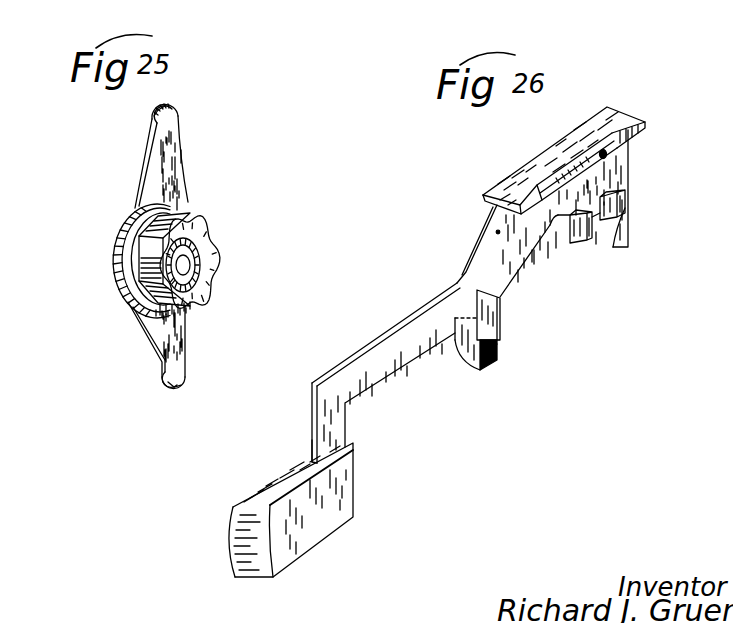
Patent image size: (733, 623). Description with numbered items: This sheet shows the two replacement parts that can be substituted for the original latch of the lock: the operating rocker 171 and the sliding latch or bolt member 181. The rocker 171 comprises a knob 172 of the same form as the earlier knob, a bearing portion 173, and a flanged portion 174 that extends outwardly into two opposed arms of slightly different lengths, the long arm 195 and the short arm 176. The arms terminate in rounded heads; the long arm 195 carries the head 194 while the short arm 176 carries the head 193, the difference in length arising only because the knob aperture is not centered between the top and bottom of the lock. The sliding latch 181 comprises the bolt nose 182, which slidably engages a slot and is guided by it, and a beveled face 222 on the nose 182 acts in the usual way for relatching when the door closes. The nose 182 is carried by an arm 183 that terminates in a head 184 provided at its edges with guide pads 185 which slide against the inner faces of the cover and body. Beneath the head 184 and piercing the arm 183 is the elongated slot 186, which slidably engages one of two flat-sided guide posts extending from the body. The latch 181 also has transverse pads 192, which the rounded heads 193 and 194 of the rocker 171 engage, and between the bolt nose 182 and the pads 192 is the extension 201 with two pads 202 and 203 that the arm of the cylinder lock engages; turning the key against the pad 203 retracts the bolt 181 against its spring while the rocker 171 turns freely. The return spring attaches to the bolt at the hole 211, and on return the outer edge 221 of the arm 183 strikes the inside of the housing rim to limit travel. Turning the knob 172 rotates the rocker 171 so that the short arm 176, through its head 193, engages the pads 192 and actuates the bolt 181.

In FIG. 25, the rocker 171 is at (199, 178).
In FIG. 25, the knob 172 is at (212, 241).
In FIG. 25, the bearing portion 173 is at (186, 206).
In FIG. 25, the flanged portion 174 is at (118, 241).
In FIG. 25, the short arm 176 is at (180, 338).
In FIG. 26, the sliding latch 181 is at (505, 318).
In FIG. 26, the bolt nose 182 is at (347, 493).
In FIG. 26, the arm 183 is at (380, 346).
In FIG. 26, the head 184 is at (640, 131).
In FIG. 26, the guide pads 185 is at (536, 194).
In FIG. 26, the elongated slot 186 is at (612, 162).
In FIG. 26, the transverse pads 192 is at (590, 236).
In FIG. 25, the head 193 is at (178, 375).
In FIG. 25, the head 194 is at (170, 118).
In FIG. 25, the upper arm 195 is at (181, 158).
In FIG. 26, the extension 201 is at (473, 364).
In FIG. 26, the pad 202 is at (500, 299).
In FIG. 26, the pad 203 is at (460, 342).
In FIG. 26, the hole 211 is at (497, 232).
In FIG. 26, the outer edge 221 is at (312, 425).
In FIG. 26, the beveled face 222 is at (260, 562).